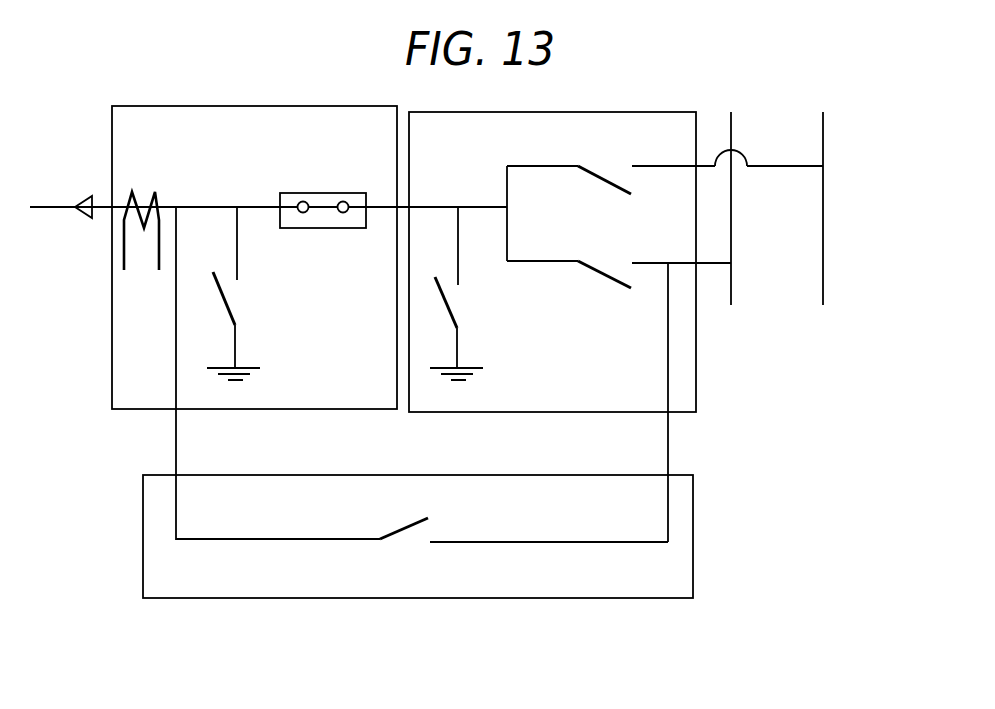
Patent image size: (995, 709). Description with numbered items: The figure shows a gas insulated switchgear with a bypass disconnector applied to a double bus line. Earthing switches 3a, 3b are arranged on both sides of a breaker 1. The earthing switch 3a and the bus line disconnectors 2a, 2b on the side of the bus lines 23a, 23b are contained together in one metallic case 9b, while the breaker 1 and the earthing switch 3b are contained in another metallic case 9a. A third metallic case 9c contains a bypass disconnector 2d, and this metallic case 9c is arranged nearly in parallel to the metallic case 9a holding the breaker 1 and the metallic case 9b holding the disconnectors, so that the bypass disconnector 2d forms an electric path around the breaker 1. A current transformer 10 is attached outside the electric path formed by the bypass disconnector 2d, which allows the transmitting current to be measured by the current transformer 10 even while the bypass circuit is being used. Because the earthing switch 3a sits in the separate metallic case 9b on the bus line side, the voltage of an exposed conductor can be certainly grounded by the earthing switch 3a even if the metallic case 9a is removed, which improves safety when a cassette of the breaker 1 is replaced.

The breaker 1 is at (326, 193).
The current transformer 10 is at (133, 197).
The bus line disconnector 2a is at (603, 182).
The bus line disconnector 2b is at (603, 277).
The bypass disconnector 2d is at (410, 525).
The earthing switch 3a is at (448, 302).
The earthing switch 3b is at (227, 298).
The metallic case 9a is at (208, 409).
The metallic case 9b is at (518, 412).
The metallic case 9c is at (387, 598).
The bus line 23a is at (736, 123).
The bus line 23b is at (827, 123).